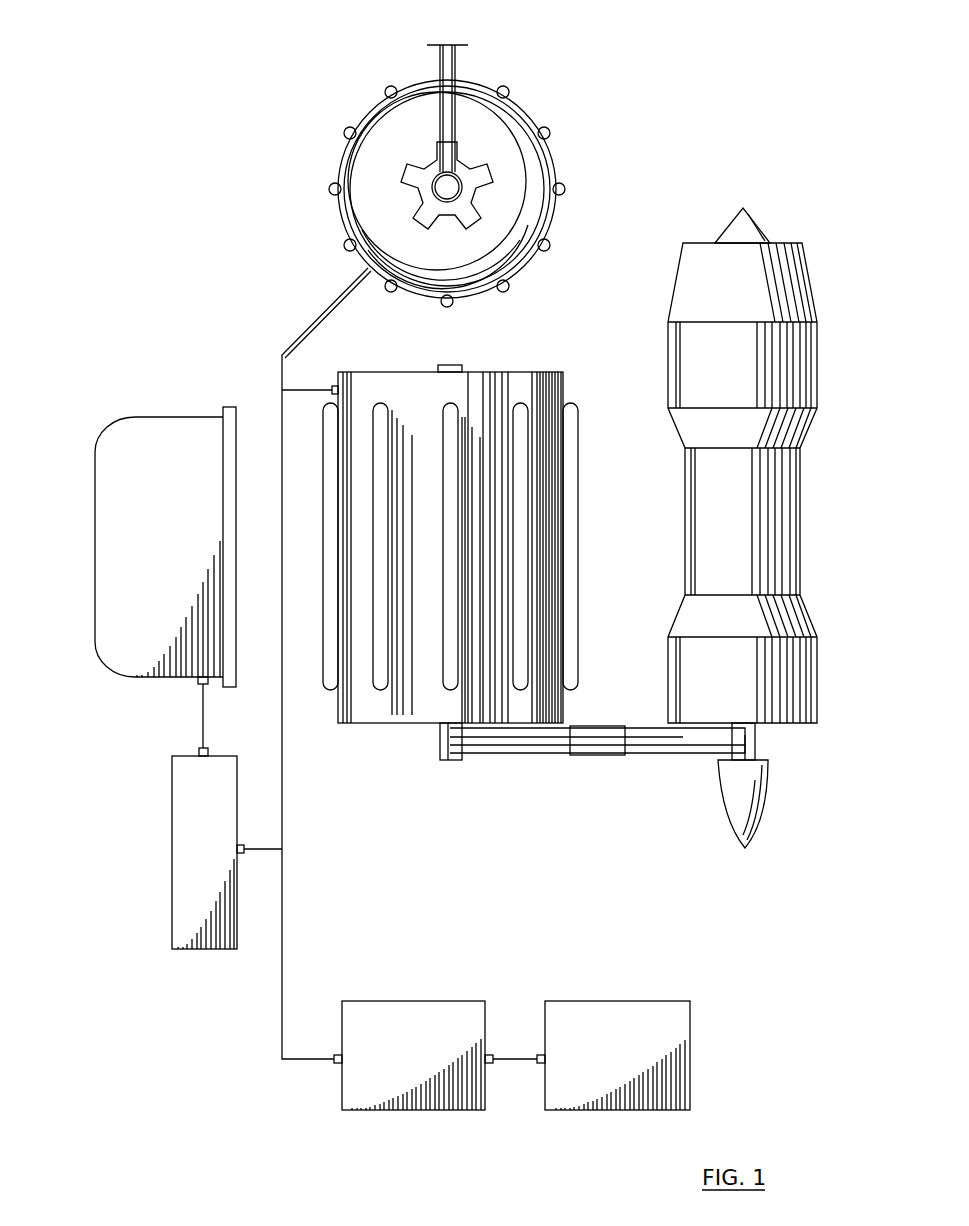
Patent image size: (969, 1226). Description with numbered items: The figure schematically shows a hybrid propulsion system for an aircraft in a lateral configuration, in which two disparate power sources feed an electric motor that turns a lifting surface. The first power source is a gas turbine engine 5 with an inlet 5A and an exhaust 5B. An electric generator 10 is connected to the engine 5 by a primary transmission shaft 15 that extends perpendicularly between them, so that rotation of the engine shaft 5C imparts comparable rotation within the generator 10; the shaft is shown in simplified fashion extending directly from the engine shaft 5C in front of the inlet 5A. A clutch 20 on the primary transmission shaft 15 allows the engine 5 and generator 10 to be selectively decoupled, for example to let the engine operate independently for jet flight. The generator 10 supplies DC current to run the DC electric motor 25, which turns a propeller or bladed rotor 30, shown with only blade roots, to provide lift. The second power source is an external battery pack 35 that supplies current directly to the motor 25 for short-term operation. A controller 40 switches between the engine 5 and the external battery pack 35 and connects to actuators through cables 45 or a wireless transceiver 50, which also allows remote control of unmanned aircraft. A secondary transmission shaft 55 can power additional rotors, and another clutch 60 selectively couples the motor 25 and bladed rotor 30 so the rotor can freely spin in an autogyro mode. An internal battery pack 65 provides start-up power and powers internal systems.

The gas turbine engine 5 is at (695, 477).
The inlet 5A is at (778, 723).
The exhaust 5B is at (738, 222).
The engine shaft 5C is at (760, 757).
The electric generator 10 is at (430, 717).
The primary transmission shaft 15 is at (660, 743).
The clutch 20 is at (605, 743).
The DC electric motor 25 is at (362, 172).
The propeller (bladed rotor) 30 is at (465, 170).
The external battery pack 35 is at (143, 428).
The controller 40 is at (373, 1012).
The cables 45 is at (300, 1060).
The wireless transceiver 50 is at (575, 1012).
The secondary transmission shaft 55 is at (445, 63).
The clutch 60 is at (432, 172).
The internal battery pack 65 is at (183, 800).